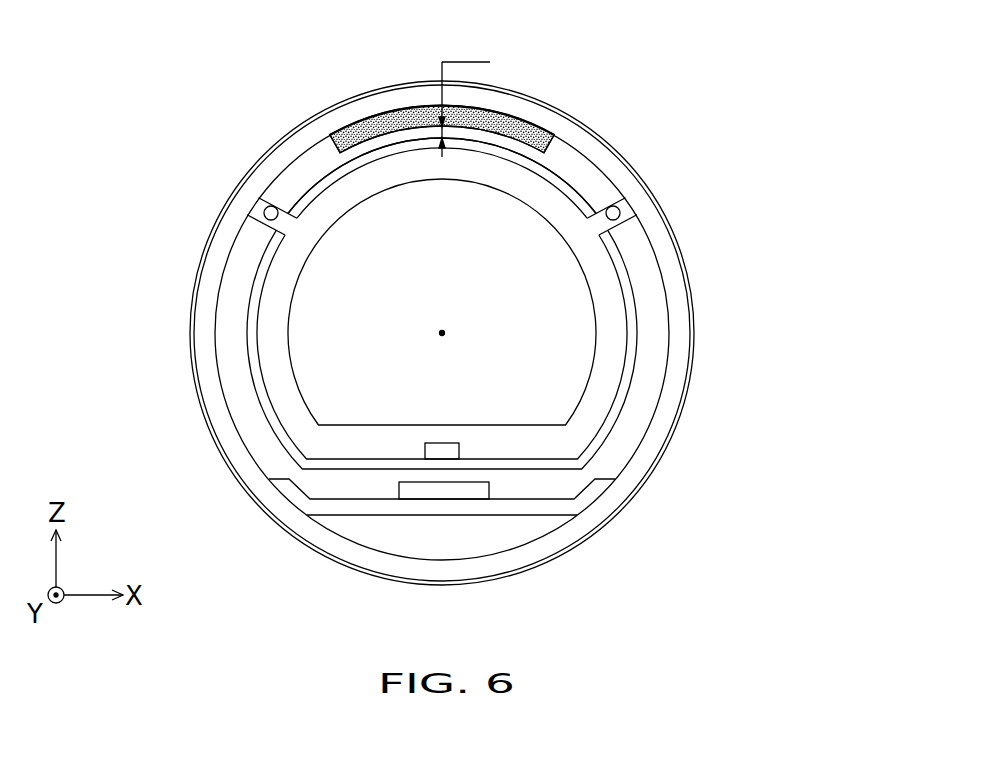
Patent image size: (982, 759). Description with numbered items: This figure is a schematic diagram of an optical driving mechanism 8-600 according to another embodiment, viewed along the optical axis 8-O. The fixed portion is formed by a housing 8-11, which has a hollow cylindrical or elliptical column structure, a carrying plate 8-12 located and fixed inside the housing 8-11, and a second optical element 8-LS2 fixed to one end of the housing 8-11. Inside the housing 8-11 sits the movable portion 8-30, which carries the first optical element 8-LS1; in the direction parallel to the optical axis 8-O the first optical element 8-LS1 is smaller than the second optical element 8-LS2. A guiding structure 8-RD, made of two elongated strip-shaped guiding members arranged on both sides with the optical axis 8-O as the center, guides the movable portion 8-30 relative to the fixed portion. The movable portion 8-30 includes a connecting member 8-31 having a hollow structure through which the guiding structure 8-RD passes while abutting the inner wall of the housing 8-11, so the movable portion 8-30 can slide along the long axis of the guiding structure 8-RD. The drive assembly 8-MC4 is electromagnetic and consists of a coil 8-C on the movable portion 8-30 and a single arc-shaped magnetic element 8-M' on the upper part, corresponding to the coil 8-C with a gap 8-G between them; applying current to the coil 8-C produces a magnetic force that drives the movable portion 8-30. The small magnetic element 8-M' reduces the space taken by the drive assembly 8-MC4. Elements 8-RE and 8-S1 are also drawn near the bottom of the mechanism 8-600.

The optical driving mechanism 8-600 is at (105, 67).
The gap 8-G is at (464, 93).
The magnetic element 8-M' is at (392, 111).
The housing 8-11 is at (543, 110).
The drive assembly 8-MC4 is at (795, 78).
The second optical element 8-LS2 is at (612, 146).
The connecting member 8-31 is at (259, 198).
The guiding structure 8-RD is at (264, 213).
The coil 8-C is at (256, 291).
The movable portion 8-30 is at (273, 327).
The optical axis 8-O is at (468, 317).
The first optical element 8-LS1 is at (365, 355).
The reference element 8-RE is at (443, 445).
The carrying plate 8-12 is at (540, 509).
The sensing element 8-S1 is at (443, 488).